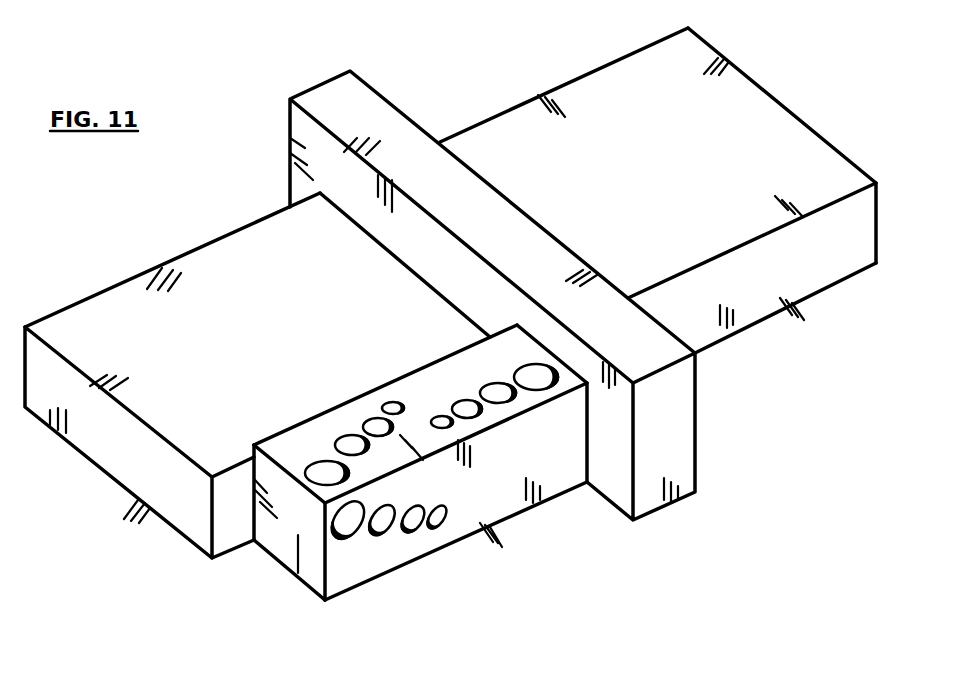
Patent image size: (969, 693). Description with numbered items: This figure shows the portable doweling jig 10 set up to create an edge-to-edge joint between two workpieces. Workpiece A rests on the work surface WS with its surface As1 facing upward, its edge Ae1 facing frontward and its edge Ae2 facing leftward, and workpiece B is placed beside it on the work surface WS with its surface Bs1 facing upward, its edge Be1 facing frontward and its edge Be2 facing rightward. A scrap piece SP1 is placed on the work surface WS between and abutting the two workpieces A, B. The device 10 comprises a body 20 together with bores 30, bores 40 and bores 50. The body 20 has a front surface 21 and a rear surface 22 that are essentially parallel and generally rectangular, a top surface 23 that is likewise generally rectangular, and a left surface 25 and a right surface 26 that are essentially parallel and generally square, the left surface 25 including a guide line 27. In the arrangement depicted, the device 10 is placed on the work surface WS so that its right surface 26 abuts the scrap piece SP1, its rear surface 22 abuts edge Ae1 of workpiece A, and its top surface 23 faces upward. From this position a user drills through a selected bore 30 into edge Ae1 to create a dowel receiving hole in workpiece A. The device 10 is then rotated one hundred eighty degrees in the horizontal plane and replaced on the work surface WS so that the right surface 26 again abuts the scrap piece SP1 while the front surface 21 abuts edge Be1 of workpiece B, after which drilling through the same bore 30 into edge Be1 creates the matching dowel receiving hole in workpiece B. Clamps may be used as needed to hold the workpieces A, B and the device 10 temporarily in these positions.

The portable doweling jig 10 is at (662, 633).
The body 20 is at (552, 612).
The front surface 21 is at (558, 478).
The rear surface 22 is at (240, 455).
The top surface 23 is at (410, 390).
The left surface 25 is at (263, 547).
The right surface 26 is at (600, 422).
The guide line 27 is at (290, 567).
The bores 30 is at (348, 537).
The bores 40 is at (383, 405).
The bores 50 is at (515, 372).
The workpiece A is at (253, 284).
The workpiece B is at (633, 177).
The scrap piece SP1 is at (430, 209).
The work surface WS is at (73, 537).
The surface of workpiece A As1 is at (133, 308).
The edge of workpiece A Ae1 is at (223, 530).
The edge of workpiece A Ae2 is at (100, 438).
The surface of workpiece B Bs1 is at (590, 98).
The edge of workpiece B Be1 is at (830, 257).
The edge of workpiece B Be2 is at (884, 218).